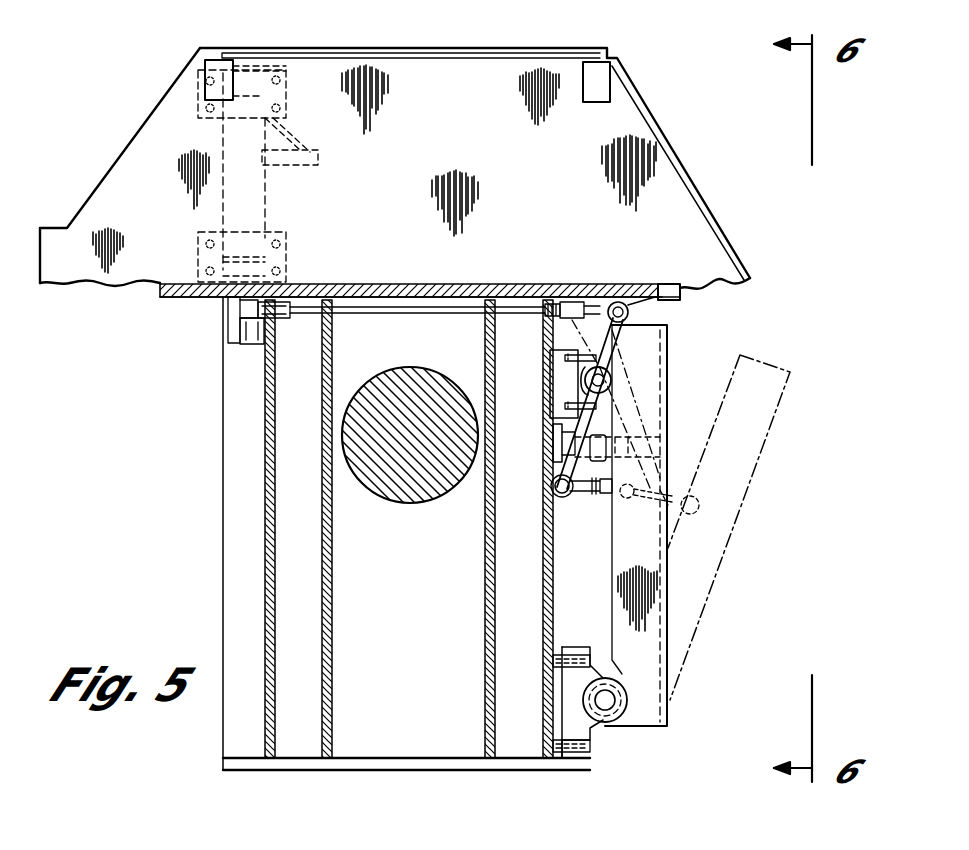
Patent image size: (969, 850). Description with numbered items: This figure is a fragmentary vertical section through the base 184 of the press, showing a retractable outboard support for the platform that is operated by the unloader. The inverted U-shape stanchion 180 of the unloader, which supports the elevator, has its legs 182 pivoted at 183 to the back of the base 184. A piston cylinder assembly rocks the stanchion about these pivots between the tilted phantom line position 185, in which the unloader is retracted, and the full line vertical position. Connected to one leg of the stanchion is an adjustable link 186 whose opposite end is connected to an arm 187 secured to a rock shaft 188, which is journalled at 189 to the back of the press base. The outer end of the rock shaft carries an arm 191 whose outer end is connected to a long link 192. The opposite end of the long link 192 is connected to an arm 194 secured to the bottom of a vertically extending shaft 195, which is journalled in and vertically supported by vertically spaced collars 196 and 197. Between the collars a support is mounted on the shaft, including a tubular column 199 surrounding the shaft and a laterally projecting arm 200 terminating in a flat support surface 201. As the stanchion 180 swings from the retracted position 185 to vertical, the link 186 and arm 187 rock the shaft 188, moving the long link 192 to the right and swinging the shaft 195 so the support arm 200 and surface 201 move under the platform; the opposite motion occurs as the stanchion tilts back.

The stanchion 180 is at (655, 334).
The legs 182 is at (660, 662).
The pivot 183 is at (598, 708).
The base 184 is at (265, 530).
The phantom line position 185 is at (768, 450).
The adjustable link 186 is at (582, 492).
The arm 187 is at (566, 428).
The rock shaft 188 is at (612, 381).
The journal 189 is at (612, 402).
The arm 191 is at (625, 350).
The long link 192 is at (380, 313).
The arm 194 is at (238, 313).
The vertically extending shaft 195 is at (250, 338).
The collar 196 is at (260, 66).
The collar 197 is at (202, 257).
The tubular column 199 is at (268, 213).
The laterally projecting arm 200 is at (295, 132).
The flat support surface 201 is at (317, 163).